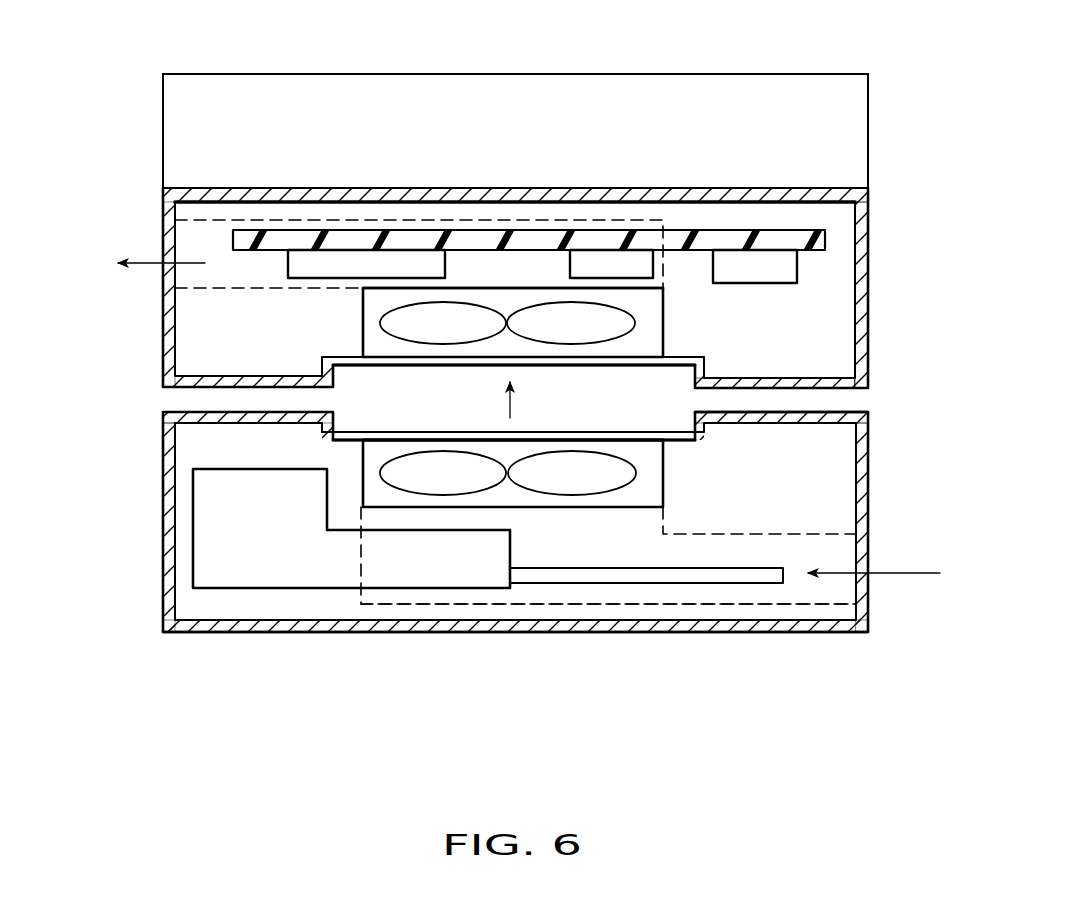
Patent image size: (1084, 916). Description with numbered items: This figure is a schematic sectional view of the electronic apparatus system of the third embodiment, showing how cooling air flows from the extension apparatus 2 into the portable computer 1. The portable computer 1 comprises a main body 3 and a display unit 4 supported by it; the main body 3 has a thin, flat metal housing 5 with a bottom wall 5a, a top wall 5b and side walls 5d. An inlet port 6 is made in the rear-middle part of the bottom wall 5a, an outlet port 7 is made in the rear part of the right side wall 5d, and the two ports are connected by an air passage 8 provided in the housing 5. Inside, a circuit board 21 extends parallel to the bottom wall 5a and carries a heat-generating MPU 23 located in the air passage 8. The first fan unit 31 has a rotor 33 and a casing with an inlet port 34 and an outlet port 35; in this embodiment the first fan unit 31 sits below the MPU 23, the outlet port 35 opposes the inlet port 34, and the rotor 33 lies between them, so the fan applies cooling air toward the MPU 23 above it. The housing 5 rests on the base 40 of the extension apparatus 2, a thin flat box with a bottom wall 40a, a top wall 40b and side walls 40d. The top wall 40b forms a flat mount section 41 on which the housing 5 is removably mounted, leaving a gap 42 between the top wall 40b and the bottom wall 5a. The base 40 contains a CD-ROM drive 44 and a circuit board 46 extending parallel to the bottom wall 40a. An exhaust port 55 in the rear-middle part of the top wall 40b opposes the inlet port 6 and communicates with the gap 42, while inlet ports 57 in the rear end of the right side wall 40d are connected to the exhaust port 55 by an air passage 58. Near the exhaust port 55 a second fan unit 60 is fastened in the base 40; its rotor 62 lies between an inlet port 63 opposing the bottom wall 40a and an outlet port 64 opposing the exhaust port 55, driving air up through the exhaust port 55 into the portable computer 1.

The portable computer 1 is at (783, 72).
The extension apparatus 2 is at (418, 636).
The main body 3 is at (869, 290).
The display unit 4 is at (869, 118).
The housing 5 is at (163, 367).
The bottom wall 5a is at (845, 372).
The top wall 5b is at (658, 196).
The side walls 5d is at (163, 318).
The inlet port 6 is at (445, 360).
The outlet port 7 is at (163, 228).
The air passage 8 is at (283, 292).
The circuit board 21 is at (785, 240).
The MPU 23 is at (400, 259).
The first fan unit 31 is at (664, 325).
The rotor 33 is at (385, 322).
The inlet port 34 is at (555, 352).
The outlet port 35 is at (514, 296).
The base 40 is at (163, 634).
The bottom wall 40a is at (568, 634).
The top wall 40b is at (210, 412).
The side walls 40d is at (163, 480).
The mount section 41 is at (742, 406).
The gap 42 is at (830, 400).
The CD-ROM drive 44 is at (300, 590).
The circuit board 46 is at (545, 575).
The exhaust port 55 is at (410, 432).
The inlet ports 57 is at (868, 542).
The air passage 58 is at (735, 605).
The second fan unit 60 is at (618, 509).
The rotor 62 is at (445, 495).
The inlet port 63 is at (542, 498).
The outlet port 64 is at (622, 440).